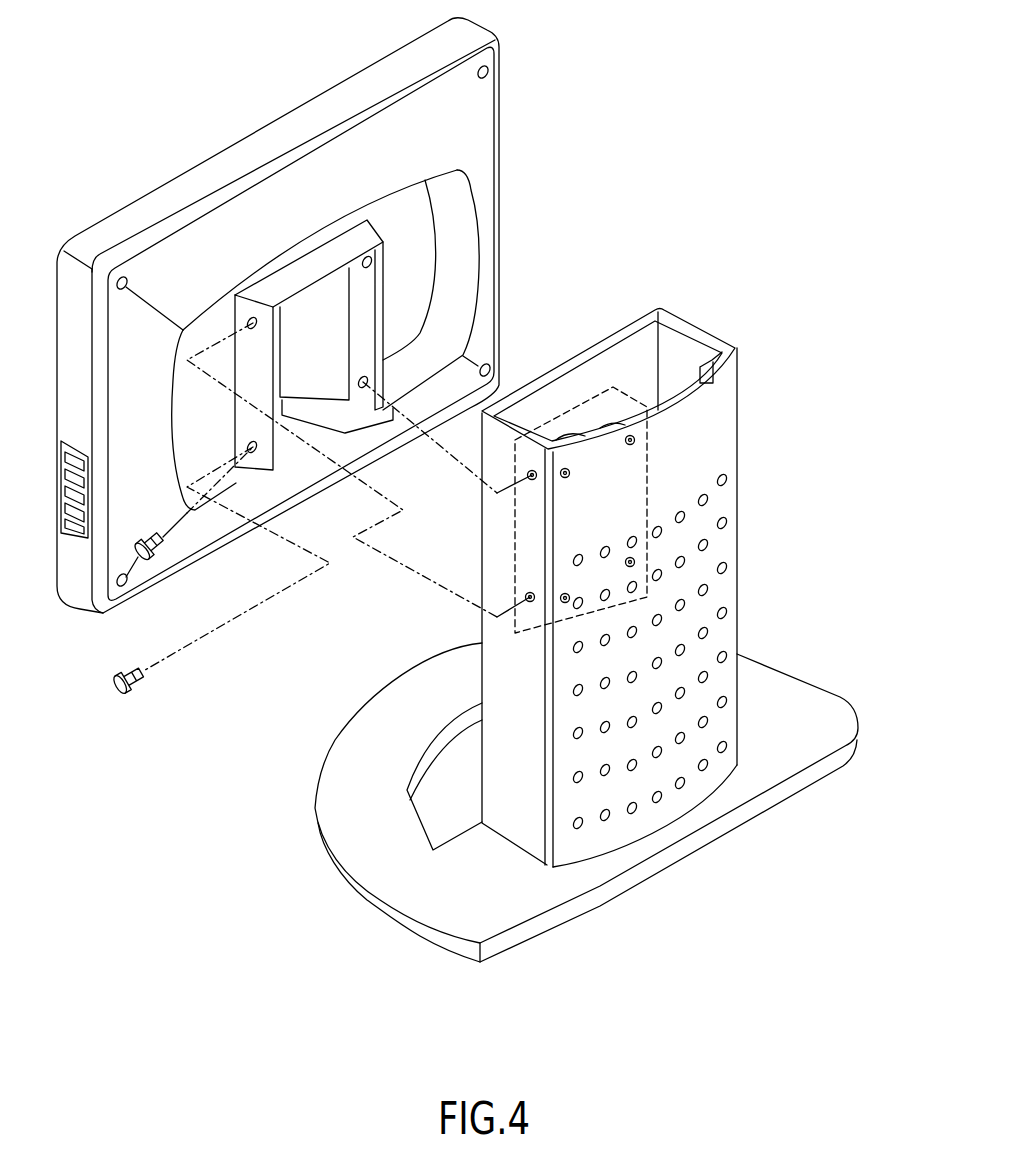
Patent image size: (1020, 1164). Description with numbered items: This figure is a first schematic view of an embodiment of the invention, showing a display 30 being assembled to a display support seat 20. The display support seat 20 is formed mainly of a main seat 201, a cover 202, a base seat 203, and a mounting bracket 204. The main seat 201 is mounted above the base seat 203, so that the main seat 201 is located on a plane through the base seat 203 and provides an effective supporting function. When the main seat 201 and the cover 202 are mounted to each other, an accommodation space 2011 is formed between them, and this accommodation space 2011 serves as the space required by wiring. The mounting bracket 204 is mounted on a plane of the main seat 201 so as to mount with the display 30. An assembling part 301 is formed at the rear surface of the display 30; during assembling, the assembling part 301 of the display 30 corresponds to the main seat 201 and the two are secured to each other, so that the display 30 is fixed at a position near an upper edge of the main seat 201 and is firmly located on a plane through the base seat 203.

The display support seat 20 is at (799, 382).
The main seat 201 is at (653, 540).
The accommodation space 2011 is at (685, 342).
The cover 202 is at (612, 837).
The base seat 203 is at (370, 860).
The mounting bracket 204 is at (527, 550).
The display 30 is at (270, 140).
The assembling part 301 is at (250, 320).